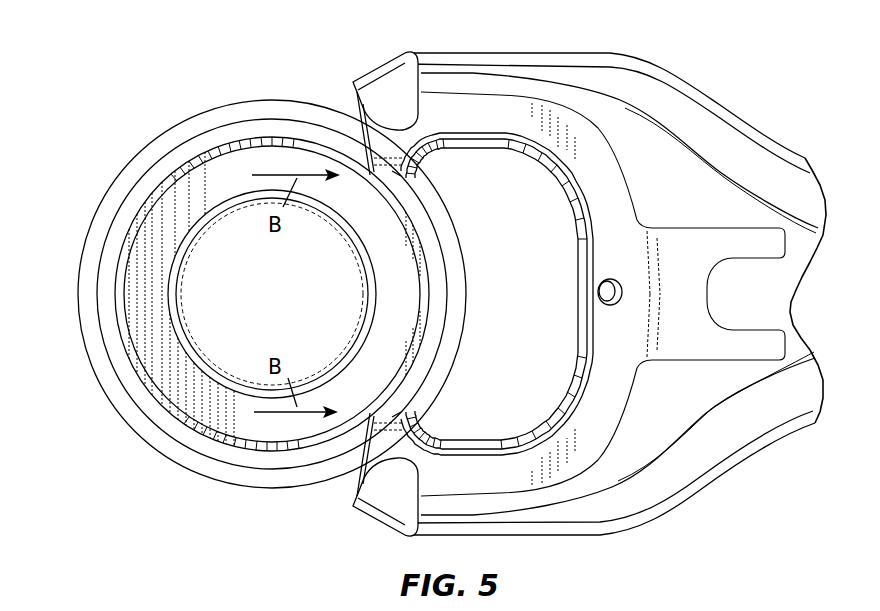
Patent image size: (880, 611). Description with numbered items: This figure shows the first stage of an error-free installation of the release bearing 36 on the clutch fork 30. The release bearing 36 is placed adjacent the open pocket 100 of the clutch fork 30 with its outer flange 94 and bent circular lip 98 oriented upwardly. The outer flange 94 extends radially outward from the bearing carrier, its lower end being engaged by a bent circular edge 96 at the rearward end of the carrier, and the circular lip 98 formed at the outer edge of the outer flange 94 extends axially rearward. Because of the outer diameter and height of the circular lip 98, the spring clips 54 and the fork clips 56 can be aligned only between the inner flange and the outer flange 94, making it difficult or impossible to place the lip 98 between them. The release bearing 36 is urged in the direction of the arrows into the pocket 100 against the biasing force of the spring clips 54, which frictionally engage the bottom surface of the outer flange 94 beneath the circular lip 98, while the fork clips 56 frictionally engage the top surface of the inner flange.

The clutch fork 30 is at (770, 167).
The release bearing 36 is at (86, 171).
The spring clips 54 is at (392, 171).
The fork clips 56 is at (356, 90).
The outer flange 94 is at (217, 168).
The bent circular edge 96 is at (177, 292).
The bent circular lip 98 is at (182, 164).
The open pocket 100 is at (578, 277).